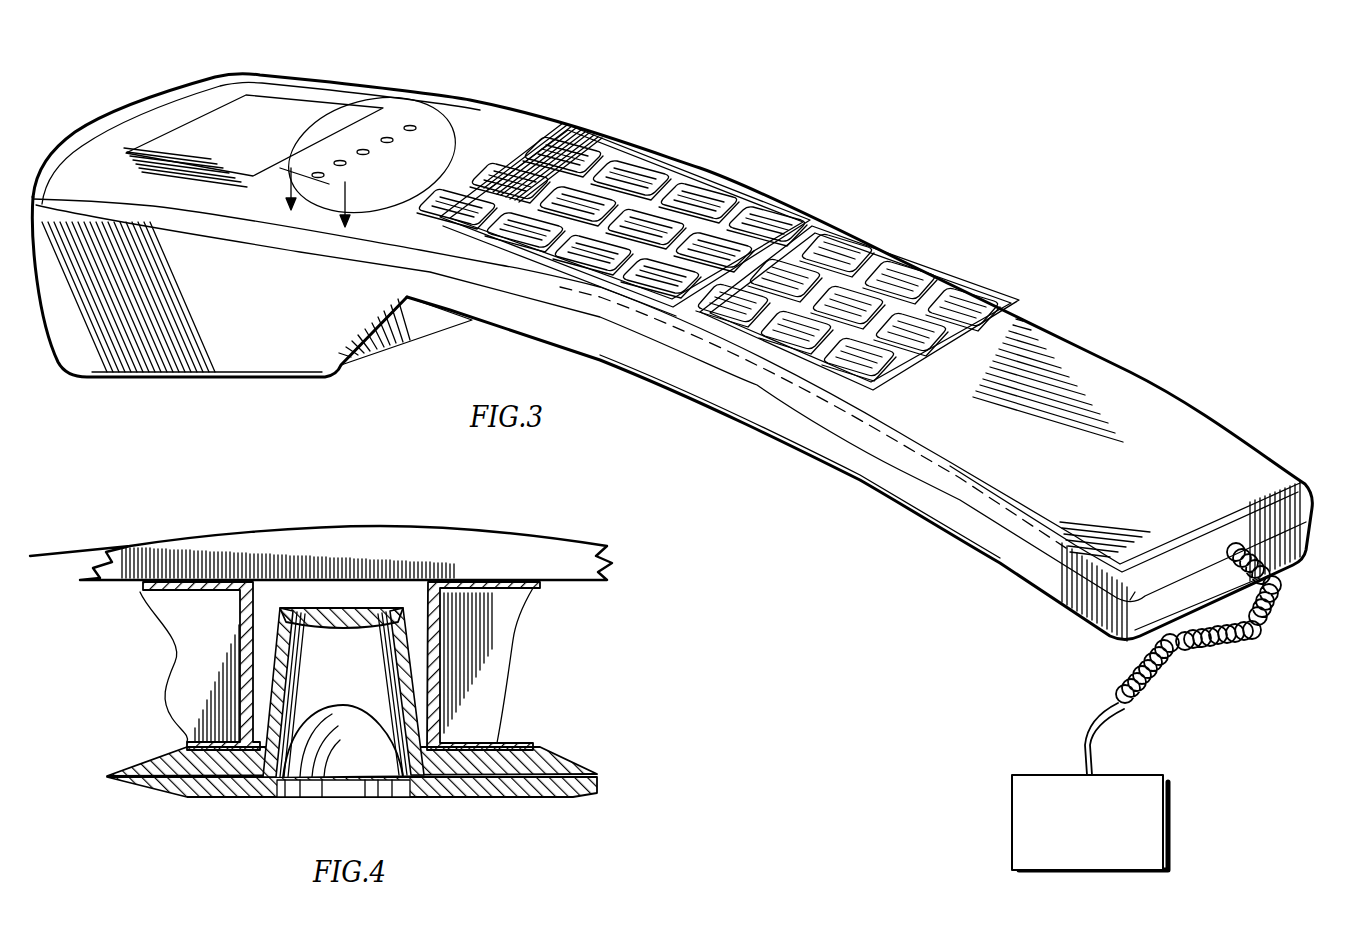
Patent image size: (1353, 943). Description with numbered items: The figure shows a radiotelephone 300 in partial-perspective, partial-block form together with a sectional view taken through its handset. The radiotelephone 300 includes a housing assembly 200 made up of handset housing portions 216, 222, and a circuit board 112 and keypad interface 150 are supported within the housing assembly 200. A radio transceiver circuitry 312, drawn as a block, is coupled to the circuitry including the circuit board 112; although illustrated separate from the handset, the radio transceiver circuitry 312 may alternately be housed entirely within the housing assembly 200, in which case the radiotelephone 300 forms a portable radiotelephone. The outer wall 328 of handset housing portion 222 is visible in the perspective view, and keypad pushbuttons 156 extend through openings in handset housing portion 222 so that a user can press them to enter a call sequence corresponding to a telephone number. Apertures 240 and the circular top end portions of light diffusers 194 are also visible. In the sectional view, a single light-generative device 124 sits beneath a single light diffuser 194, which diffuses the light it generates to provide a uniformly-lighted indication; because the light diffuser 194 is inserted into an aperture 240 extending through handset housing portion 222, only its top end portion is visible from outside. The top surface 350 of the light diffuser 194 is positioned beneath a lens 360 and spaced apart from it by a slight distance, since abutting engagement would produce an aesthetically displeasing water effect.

In FIG. 3, the housing assembly 200 is at (193, 107).
In FIG. 3, the light diffuser 194 is at (412, 127).
In FIG. 4, the light diffuser 194 is at (404, 635).
In FIG. 3, the keypad pushbuttons 156 is at (910, 277).
In FIG. 3, the outer wall 328 is at (667, 333).
In FIG. 3, the handset housing portion 216 is at (852, 463).
In FIG. 3, the handset housing portion 222 is at (1240, 460).
In FIG. 4, the handset housing portion 222 is at (507, 640).
In FIG. 3, the radiotelephone 300 is at (1162, 248).
In FIG. 3, the radio transceiver circuitry 312 is at (1148, 777).
In FIG. 4, the lens 360 is at (327, 526).
In FIG. 4, the aperture 240 is at (262, 593).
In FIG. 4, the top surface 350 is at (327, 626).
In FIG. 4, the light-generative device 124 is at (358, 709).
In FIG. 4, the keypad interface 150 is at (530, 750).
In FIG. 4, the circuit board 112 is at (557, 788).